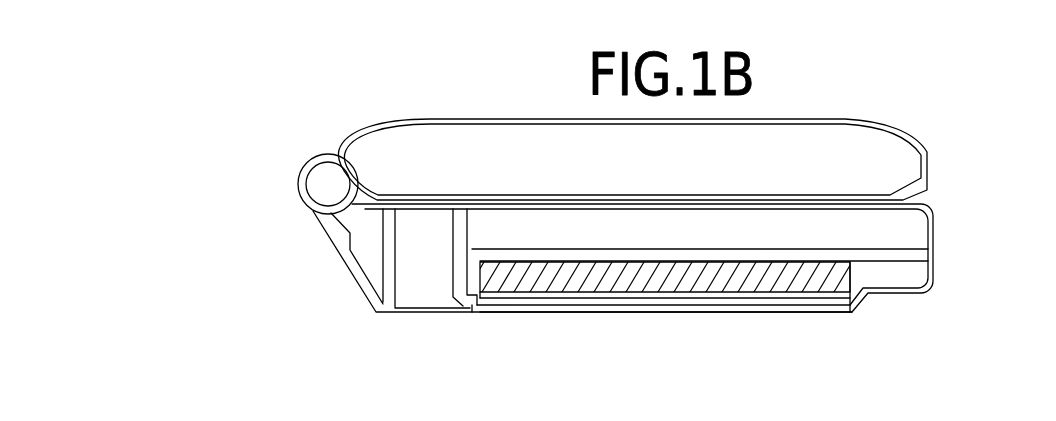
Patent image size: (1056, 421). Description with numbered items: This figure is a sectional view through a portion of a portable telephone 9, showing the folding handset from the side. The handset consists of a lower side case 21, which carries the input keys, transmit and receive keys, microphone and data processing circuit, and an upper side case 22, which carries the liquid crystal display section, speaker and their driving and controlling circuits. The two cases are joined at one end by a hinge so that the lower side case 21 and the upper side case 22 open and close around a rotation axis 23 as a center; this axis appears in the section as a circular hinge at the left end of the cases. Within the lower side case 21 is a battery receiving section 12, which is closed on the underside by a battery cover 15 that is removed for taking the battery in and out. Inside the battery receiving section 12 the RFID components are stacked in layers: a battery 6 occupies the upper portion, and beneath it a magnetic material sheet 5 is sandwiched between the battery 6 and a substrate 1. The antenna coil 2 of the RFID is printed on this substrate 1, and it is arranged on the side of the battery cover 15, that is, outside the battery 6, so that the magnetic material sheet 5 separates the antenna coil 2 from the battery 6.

The portable telephone 9 is at (351, 116).
The upper side case 22 is at (927, 153).
The lower side case 21 is at (932, 212).
The rotation axis 23 is at (313, 183).
The battery receiving section 12 is at (917, 277).
The battery 6 is at (523, 282).
The magnetic material sheet 5 is at (582, 298).
The substrate 1 is at (648, 305).
The antenna coil 2 is at (707, 311).
The battery cover 15 is at (788, 312).